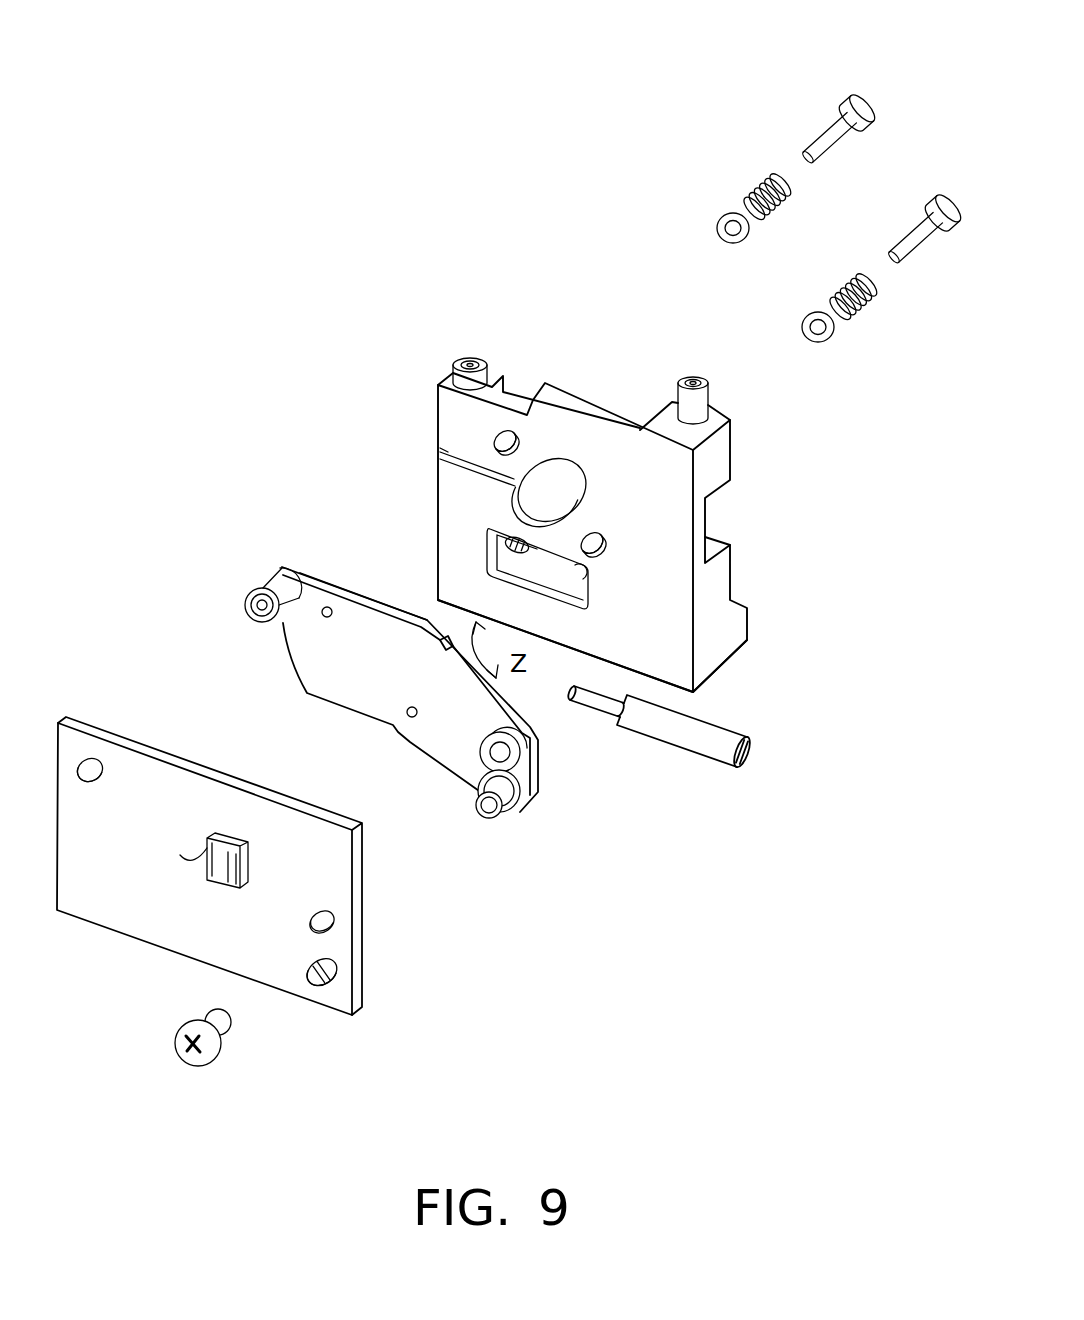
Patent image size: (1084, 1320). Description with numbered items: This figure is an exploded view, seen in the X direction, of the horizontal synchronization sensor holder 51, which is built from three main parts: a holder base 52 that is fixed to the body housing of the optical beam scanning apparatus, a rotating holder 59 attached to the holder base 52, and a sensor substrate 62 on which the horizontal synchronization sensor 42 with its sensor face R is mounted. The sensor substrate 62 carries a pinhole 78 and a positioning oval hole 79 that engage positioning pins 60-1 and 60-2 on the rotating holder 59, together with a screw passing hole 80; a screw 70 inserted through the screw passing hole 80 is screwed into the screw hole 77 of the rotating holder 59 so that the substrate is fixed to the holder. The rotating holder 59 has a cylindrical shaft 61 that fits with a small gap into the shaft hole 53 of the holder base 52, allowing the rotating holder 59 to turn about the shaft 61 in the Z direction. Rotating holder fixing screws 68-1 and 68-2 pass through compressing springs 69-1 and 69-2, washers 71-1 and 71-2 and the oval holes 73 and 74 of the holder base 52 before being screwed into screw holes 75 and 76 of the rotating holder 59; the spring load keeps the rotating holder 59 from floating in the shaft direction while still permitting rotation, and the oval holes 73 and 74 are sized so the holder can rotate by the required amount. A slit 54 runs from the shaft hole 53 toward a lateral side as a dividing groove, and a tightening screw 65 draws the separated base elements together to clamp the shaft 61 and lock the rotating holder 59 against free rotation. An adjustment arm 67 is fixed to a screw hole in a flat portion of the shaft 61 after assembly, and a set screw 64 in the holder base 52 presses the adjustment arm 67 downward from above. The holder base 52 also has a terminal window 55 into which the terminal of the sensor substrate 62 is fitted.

The horizontal synchronization sensor 42 is at (207, 882).
The horizontal synchronization sensor holder 51 is at (791, 891).
The holder base 52 is at (668, 595).
The shaft hole 53 is at (543, 490).
The slit 54 is at (442, 452).
The terminal window 55 is at (697, 682).
The rotating holder 59 is at (330, 686).
The positioning pin 60-1 is at (258, 605).
The positioning pin 60-2 is at (492, 812).
The shaft 61 is at (408, 600).
The sensor substrate 62 is at (257, 947).
The set screw 64 is at (710, 403).
The tightening screw 65 is at (452, 365).
The adjustment arm 67 is at (692, 735).
The rotating holder fixing screw 68-1 is at (852, 100).
The rotating holder fixing screw 68-2 is at (940, 198).
The compressing spring 69-1 is at (770, 178).
The compressing spring 69-2 is at (868, 298).
The screw 70 is at (215, 1047).
The washer 71-1 is at (741, 244).
The washer 71-2 is at (835, 338).
The oval hole 73 is at (493, 440).
The oval hole 74 is at (604, 543).
The screw hole 75 is at (323, 615).
The screw hole 76 is at (408, 714).
The screw hole 77 is at (522, 760).
The pinhole 78 is at (93, 758).
The positioning oval hole 79 is at (362, 997).
The screw passing hole 80 is at (333, 937).